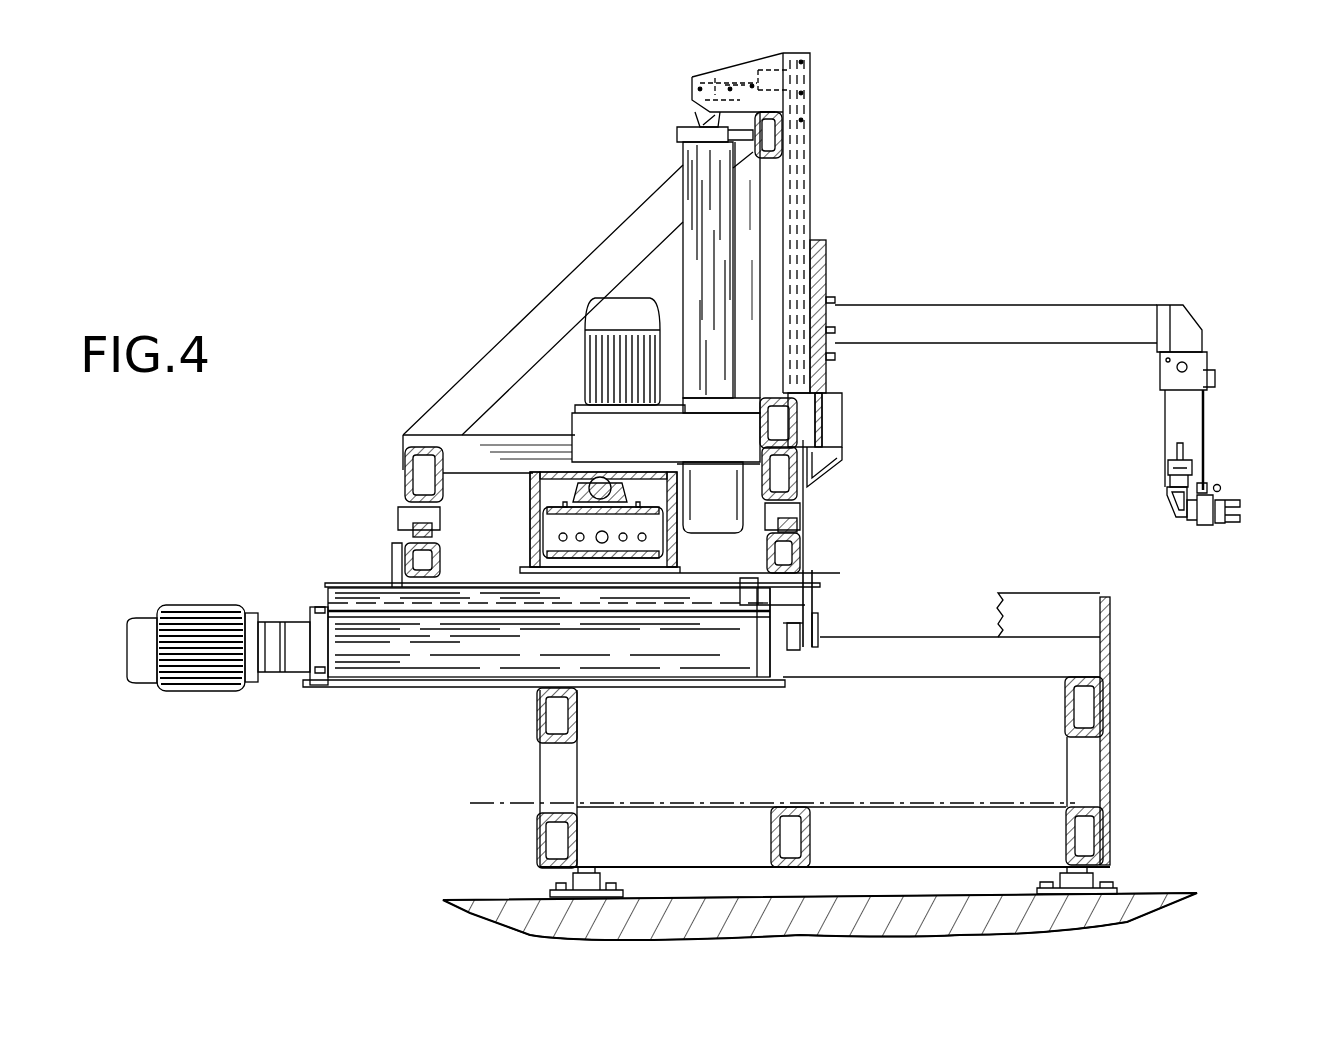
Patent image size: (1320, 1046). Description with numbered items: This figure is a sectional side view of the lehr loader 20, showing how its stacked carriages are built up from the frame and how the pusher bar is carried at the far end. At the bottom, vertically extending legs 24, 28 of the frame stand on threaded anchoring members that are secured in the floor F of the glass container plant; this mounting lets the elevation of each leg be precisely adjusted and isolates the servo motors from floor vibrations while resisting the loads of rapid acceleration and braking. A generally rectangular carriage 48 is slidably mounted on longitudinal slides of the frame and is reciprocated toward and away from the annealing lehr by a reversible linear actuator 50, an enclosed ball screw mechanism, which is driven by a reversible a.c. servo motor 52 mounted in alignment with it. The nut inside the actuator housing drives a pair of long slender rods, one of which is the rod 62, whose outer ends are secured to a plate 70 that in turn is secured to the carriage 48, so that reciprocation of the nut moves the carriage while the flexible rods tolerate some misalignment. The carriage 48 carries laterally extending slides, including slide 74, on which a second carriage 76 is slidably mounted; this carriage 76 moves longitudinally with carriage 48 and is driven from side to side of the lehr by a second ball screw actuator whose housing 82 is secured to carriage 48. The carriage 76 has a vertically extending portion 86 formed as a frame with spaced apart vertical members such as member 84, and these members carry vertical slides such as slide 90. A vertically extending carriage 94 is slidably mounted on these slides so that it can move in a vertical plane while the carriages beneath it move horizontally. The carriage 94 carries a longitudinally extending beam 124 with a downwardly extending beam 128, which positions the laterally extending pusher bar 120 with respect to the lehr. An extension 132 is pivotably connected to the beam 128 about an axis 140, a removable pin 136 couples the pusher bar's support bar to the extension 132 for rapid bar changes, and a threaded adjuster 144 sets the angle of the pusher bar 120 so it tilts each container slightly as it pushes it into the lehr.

The lehr loader 20 is at (848, 228).
The vertically extending leg 24 is at (1088, 778).
The vertically extending leg 28 is at (545, 762).
The carriage 48 is at (805, 548).
The reversible linear actuator 50 is at (415, 655).
The reversible a.c. servo motor 52 is at (200, 688).
The rod 62 is at (788, 650).
The plate 70 is at (805, 650).
The laterally extending slide 74 is at (402, 525).
The carriage 76 is at (405, 470).
The housing 82 is at (550, 533).
The vertically extending member 84 is at (772, 173).
The vertically extending portion 86 is at (772, 276).
The vertically extending slide 90 is at (815, 205).
The vertically extending carriage 94 is at (735, 75).
The pusher bar 120 is at (1232, 500).
The longitudinally extending beam 124 is at (970, 316).
The downwardly extending beam 128 is at (1195, 412).
The extension 132 is at (1172, 490).
The removable pin 136 is at (1222, 488).
The axis 140 is at (1205, 485).
The threaded adjuster 144 is at (1170, 470).
The floor F is at (1128, 900).